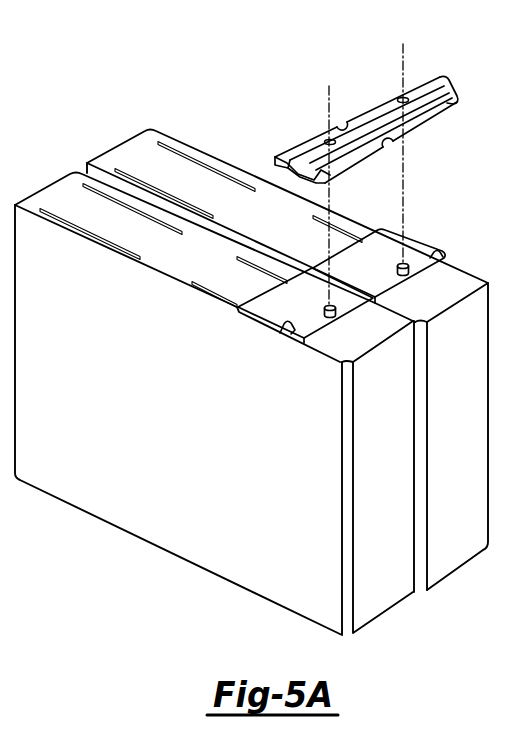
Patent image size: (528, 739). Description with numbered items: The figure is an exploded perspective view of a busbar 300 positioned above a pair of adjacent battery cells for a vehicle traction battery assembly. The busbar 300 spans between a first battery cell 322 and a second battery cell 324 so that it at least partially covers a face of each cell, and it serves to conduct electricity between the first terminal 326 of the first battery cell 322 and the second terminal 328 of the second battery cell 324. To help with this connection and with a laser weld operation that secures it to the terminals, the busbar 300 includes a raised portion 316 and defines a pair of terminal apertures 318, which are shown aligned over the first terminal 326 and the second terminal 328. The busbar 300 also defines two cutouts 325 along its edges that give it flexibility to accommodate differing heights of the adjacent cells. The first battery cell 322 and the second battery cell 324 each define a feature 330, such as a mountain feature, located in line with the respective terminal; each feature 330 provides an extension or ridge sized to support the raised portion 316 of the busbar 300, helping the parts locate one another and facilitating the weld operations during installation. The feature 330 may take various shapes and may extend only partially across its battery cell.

The busbar 300 is at (383, 123).
The raised portion 316 is at (444, 83).
The terminal apertures 318 is at (328, 139).
The first battery cell 322 is at (377, 587).
The second battery cell 324 is at (452, 546).
The cutouts 325 is at (344, 114).
The first terminal 326 is at (324, 311).
The second terminal 328 is at (404, 262).
The feature 330 is at (280, 331).